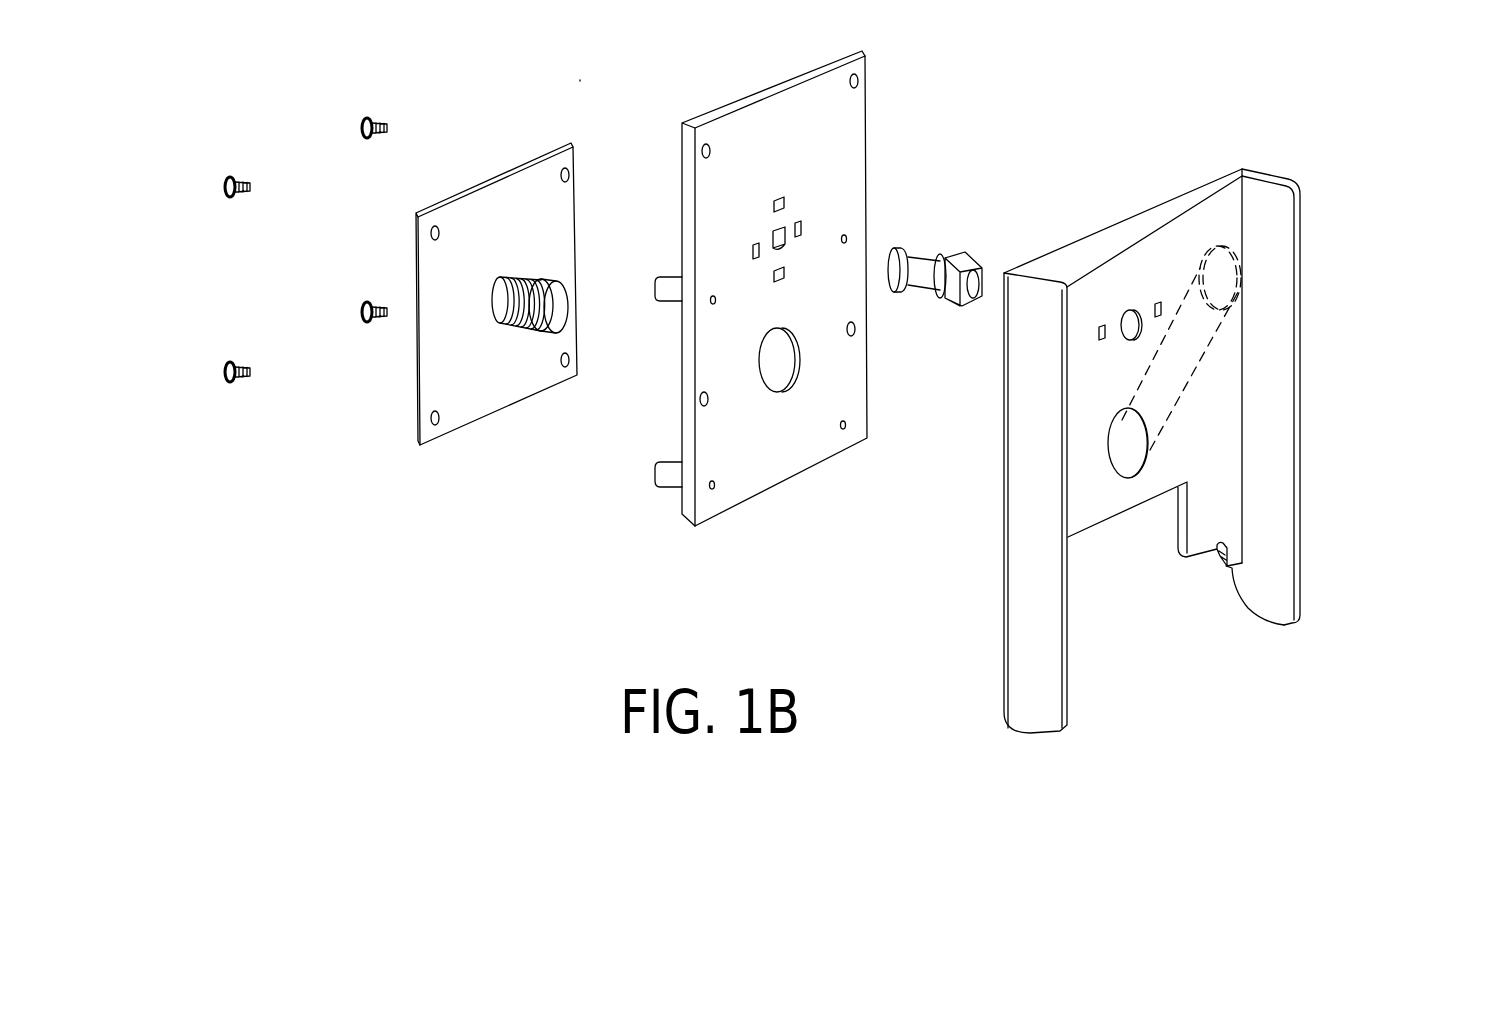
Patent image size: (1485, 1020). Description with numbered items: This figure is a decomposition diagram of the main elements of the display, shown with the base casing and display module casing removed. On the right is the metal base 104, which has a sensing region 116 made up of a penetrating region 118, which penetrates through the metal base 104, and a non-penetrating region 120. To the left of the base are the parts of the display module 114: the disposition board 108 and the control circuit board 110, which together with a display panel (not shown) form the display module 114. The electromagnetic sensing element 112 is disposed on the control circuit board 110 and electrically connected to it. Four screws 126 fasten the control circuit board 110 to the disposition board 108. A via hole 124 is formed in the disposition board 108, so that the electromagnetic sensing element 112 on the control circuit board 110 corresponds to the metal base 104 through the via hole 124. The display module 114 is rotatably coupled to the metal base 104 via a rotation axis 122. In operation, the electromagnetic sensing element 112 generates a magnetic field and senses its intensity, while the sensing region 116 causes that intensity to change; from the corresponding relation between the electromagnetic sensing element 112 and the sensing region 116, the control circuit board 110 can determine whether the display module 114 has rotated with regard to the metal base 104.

The metal base 104 is at (1262, 173).
The disposition board 108 is at (740, 106).
The control circuit board 110 is at (547, 153).
The electromagnetic sensing element 112 is at (557, 317).
The display module 114 is at (698, 73).
The sensing region 116 is at (1377, 333).
The penetrating region 118 is at (1160, 457).
The non-penetrating region 120 is at (1213, 343).
The rotation axis 122 is at (917, 267).
The via hole 124 is at (805, 368).
The screw 126 is at (247, 180).